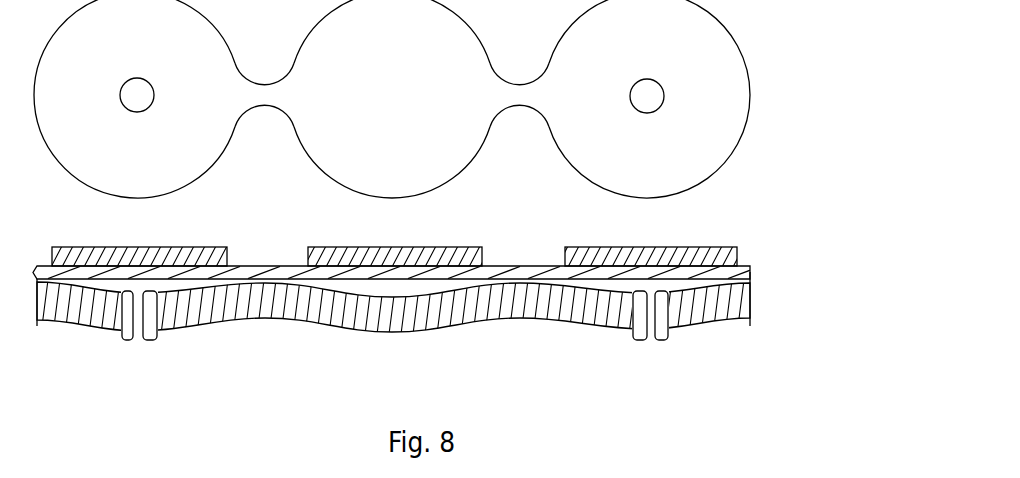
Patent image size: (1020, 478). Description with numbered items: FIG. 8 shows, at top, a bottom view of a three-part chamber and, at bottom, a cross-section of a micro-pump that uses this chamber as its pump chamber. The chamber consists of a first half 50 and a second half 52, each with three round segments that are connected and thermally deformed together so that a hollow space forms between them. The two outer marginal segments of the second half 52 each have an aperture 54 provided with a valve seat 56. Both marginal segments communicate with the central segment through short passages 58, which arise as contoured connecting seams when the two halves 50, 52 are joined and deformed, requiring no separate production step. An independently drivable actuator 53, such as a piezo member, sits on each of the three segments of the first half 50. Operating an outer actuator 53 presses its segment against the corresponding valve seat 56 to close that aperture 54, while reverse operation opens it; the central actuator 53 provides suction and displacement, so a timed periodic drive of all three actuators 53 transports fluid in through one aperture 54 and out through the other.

The first chamber half 50 is at (758, 267).
The second chamber half 52 is at (737, 51).
The actuator 53 is at (217, 238).
The aperture 54 is at (675, 103).
The valve seat 56 is at (678, 340).
The short passage 58 is at (530, 106).